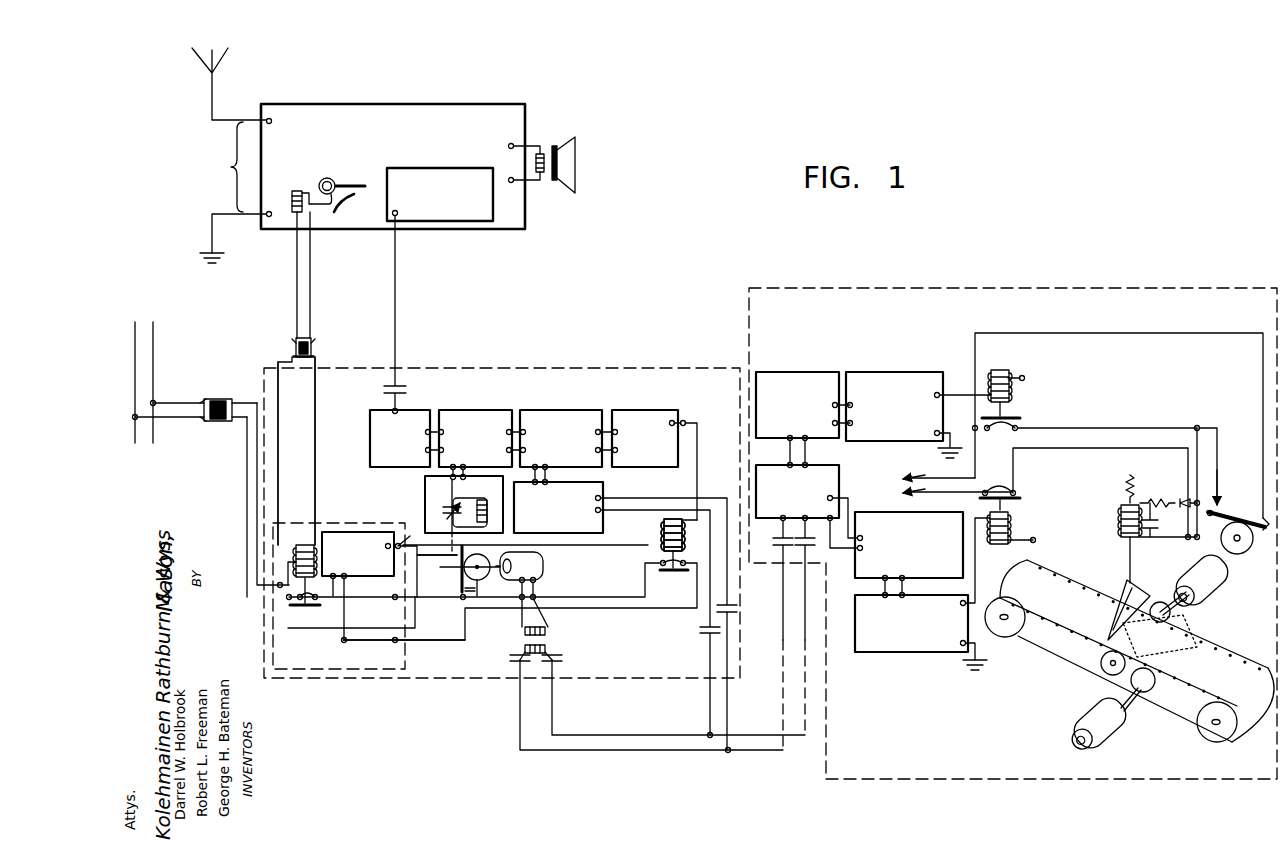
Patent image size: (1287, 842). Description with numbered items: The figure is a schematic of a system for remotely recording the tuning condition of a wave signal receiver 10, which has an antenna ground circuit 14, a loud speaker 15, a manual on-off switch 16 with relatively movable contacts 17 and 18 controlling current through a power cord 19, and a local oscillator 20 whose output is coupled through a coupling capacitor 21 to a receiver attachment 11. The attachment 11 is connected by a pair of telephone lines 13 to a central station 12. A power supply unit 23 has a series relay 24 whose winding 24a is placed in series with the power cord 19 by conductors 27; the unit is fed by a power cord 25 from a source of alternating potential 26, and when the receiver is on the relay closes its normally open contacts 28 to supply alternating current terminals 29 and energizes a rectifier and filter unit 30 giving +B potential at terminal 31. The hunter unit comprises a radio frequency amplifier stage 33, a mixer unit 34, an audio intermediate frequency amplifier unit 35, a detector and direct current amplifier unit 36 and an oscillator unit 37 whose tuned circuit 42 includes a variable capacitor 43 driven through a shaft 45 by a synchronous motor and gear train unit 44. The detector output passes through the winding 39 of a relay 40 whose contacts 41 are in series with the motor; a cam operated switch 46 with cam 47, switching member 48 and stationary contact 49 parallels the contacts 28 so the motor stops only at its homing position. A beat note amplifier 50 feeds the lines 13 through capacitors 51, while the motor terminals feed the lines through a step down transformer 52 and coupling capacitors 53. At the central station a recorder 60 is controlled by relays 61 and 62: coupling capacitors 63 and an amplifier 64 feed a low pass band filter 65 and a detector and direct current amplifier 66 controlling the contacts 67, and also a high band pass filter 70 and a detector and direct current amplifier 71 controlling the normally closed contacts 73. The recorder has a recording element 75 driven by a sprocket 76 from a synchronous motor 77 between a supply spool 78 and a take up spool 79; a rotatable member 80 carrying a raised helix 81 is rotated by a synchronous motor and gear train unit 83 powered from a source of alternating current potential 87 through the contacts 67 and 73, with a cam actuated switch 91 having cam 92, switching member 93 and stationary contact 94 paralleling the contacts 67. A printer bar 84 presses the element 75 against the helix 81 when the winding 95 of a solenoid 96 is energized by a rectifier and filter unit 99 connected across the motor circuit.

The wave signal receiver 10 is at (349, 112).
The receiver attachment 11 is at (539, 369).
The central station 12 is at (786, 295).
The telephone lines 13 is at (625, 739).
The antenna ground circuit 14 is at (232, 155).
The loud speaker 15 is at (559, 145).
The manual on-off switch 16 is at (327, 176).
The movable contact 17 is at (355, 182).
The movable contact 18 is at (350, 197).
The power cord 19 is at (300, 277).
The local oscillator 20 is at (438, 175).
The coupling capacitor 21 is at (402, 385).
The power supply unit 23 is at (338, 527).
The series relay 24 is at (308, 544).
The relay winding 24a is at (290, 542).
The power cord 25 is at (243, 404).
The source of alternating potential 26 is at (136, 377).
The conductors 27 is at (288, 424).
The normally open contacts 28 is at (317, 602).
The alternating current terminals 29 is at (395, 638).
The rectifier and filter unit 30 is at (376, 530).
The +B terminal 31 is at (404, 538).
The radio frequency amplifier stage 33 is at (372, 410).
The mixer unit 34 is at (465, 413).
The audio intermediate frequency amplifier unit 35 is at (557, 413).
The detector and direct current amplifier unit 36 is at (646, 413).
The oscillator unit 37 is at (426, 483).
The relay winding 39 is at (682, 540).
The relay 40 is at (668, 516).
The relay contacts 41 is at (663, 561).
The tuned circuit 42 is at (487, 513).
The variable capacitor 43 is at (453, 508).
The synchronous motor and gear train unit 44 is at (543, 572).
The shaft 45 is at (443, 569).
The cam operated switch 46 is at (460, 588).
The cam 47 is at (477, 589).
The switching member 48 is at (496, 540).
The stationary contact 49 is at (460, 550).
The beat note amplifier 50 is at (602, 494).
The capacitors 51 is at (708, 628).
The step down transformer 52 is at (522, 640).
The coupling capacitors 53 is at (560, 662).
The recorder 60 is at (1080, 530).
The relay 61 is at (1008, 353).
The relay 62 is at (1009, 518).
The coupling capacitors 63 is at (788, 552).
The amplifier 64 is at (778, 452).
The low pass band filter 65 is at (782, 373).
The detector and direct current amplifier 66 is at (904, 373).
The relay contacts 67 is at (1000, 432).
The high band pass filter 70 is at (852, 530).
The detector and direct current amplifier 71 is at (856, 613).
The normally closed contacts 73 is at (1000, 486).
The recording element 75 is at (1080, 626).
The rotatable sprocket 76 is at (1146, 696).
The synchronous motor 77 is at (1089, 714).
The supply spool 78 is at (1015, 634).
The take up spool 79 is at (1206, 728).
The rotatable member 80 is at (1103, 669).
The raised helix 81 is at (1168, 612).
The synchronous motor and gear train unit 83 is at (1225, 572).
The solenoid actuated printer bar 84 is at (1119, 592).
The source of alternating current potential 87 is at (898, 480).
The cam actuated switch 91 is at (1258, 504).
The cam 92 is at (1243, 541).
The switching member 93 is at (1211, 523).
The stationary contact 94 is at (1230, 494).
The solenoid winding 95 is at (1118, 514).
The solenoid 96 is at (1133, 484).
The rectifier and filter unit 99 is at (1159, 527).